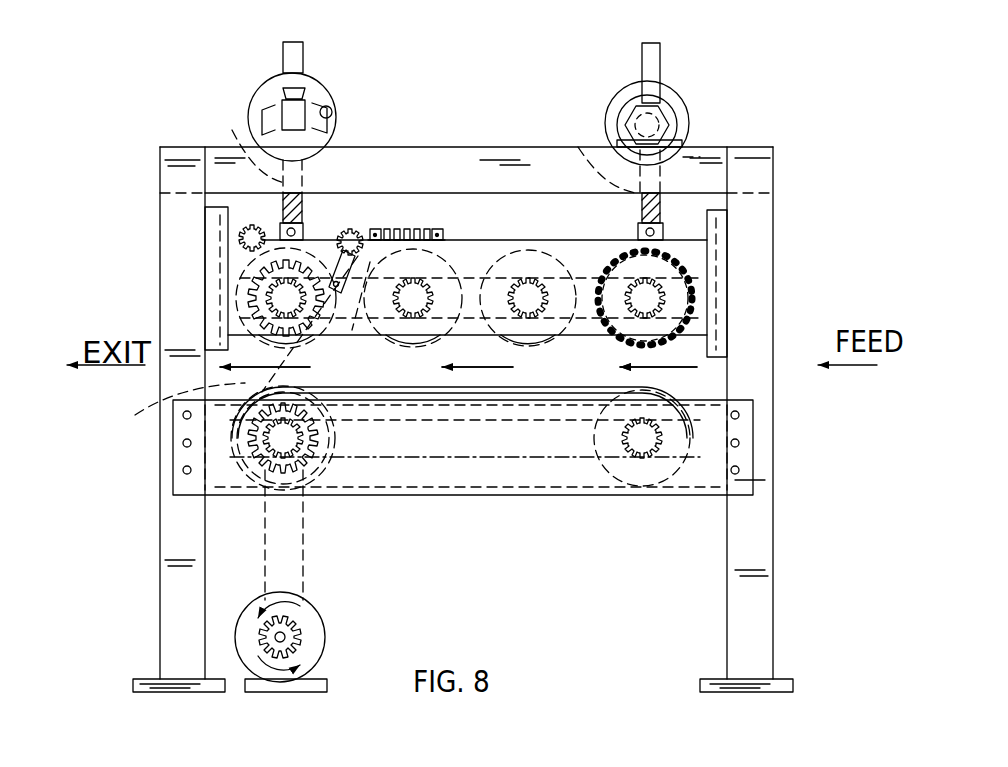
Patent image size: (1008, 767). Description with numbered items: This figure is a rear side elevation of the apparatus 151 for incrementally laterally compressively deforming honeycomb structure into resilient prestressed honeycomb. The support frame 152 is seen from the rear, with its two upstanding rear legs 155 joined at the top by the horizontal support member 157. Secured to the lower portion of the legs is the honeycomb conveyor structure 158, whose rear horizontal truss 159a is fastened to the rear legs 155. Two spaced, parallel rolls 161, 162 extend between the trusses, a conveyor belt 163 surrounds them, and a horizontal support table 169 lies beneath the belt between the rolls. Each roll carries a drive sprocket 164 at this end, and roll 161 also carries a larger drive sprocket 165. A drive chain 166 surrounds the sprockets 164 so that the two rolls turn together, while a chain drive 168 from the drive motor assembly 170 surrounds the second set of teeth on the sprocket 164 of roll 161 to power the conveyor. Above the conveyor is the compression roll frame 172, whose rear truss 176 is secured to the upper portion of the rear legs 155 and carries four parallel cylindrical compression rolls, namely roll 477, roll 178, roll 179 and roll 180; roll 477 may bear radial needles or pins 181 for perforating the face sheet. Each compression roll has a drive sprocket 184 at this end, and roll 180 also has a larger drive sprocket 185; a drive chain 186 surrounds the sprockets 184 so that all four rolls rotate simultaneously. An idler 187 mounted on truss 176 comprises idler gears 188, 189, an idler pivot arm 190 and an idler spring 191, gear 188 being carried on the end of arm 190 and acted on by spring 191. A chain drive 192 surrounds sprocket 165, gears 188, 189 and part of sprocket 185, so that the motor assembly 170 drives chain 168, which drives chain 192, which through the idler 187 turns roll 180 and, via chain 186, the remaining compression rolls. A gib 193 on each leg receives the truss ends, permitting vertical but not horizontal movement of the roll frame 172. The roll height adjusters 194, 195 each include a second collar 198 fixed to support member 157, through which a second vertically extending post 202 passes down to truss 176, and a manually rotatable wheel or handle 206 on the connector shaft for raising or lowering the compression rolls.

The apparatus 151 is at (177, 130).
The support frame 152 is at (160, 218).
The rear legs 155 is at (160, 497).
The horizontal support member 157 is at (455, 160).
The honeycomb conveyor structure 158 is at (458, 473).
The horizontal truss 159a is at (545, 475).
The roll 161 is at (258, 473).
The roll 162 is at (660, 458).
The conveyor belt 163 is at (690, 388).
The drive sprocket 164 is at (298, 447).
The drive sprocket 165 is at (250, 437).
The drive chain 166 is at (485, 455).
The chain drive 168 is at (305, 573).
The horizontal support table 169 is at (450, 393).
The drive motor assembly 170 is at (325, 636).
The compression roll frame 172 is at (697, 260).
The horizontal truss 176 is at (590, 258).
The compression roll 178 is at (533, 338).
The compression roll 179 is at (430, 337).
The compression roll 180 is at (272, 342).
The needles or pins 181 is at (620, 330).
The drive sprocket 184 is at (305, 300).
The drive sprocket 185 is at (262, 298).
The drive chain 186 is at (482, 280).
The idler 187 is at (358, 223).
The idler gear 188 is at (362, 232).
The idler gear 189 is at (243, 240).
The idler pivot arm 190 is at (378, 335).
The idler spring 191 is at (424, 230).
The chain drive 192 is at (165, 409).
The gib 193 is at (215, 222).
The roll height adjuster 194 is at (307, 52).
The roll height adjuster 195 is at (665, 55).
The second collar 198 is at (283, 62).
The second vertically extending post 202 is at (414, 142).
The wheel or handle 206 is at (318, 95).
The compression roll 477 is at (698, 300).